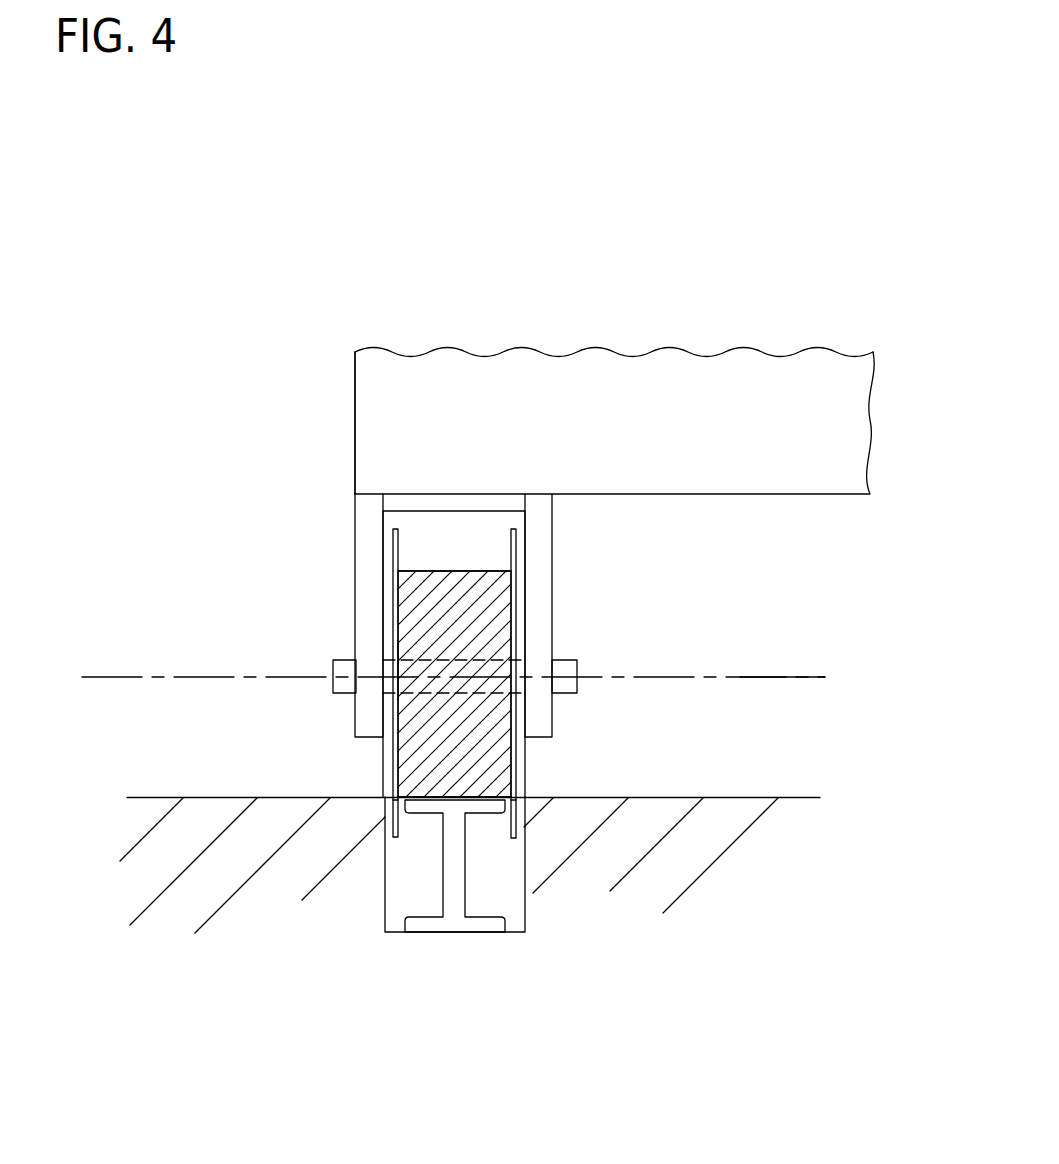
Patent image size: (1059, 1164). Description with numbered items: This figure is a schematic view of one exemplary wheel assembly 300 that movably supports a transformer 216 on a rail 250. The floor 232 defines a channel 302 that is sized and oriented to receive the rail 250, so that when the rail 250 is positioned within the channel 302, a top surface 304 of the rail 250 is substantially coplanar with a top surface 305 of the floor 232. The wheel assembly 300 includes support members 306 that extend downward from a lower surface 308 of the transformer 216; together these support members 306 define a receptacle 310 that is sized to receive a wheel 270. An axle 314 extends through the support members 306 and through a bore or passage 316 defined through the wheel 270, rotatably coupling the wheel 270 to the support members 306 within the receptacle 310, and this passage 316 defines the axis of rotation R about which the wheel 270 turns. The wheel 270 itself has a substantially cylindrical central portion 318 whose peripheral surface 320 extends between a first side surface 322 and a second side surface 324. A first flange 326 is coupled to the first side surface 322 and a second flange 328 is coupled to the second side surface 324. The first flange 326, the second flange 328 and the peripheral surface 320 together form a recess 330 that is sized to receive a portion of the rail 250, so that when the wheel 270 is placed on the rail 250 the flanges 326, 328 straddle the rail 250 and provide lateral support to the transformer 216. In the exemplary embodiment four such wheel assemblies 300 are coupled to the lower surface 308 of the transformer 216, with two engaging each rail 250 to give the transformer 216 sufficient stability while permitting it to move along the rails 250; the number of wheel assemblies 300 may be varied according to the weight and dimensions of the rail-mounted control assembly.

The transformer 216 is at (355, 356).
The wheel assembly 300 is at (157, 533).
The receptacle 310 is at (432, 540).
The support member 306 is at (356, 522).
The lower surface 308 is at (762, 494).
The peripheral surface 320 is at (470, 571).
The first side surface 322 is at (393, 627).
The second side surface 324 is at (516, 643).
The bore or passage 316 is at (420, 657).
The axle 314 is at (577, 662).
The top surface of floor 305 is at (207, 798).
The axis of rotation R is at (772, 678).
The wheel 270 is at (425, 750).
The top surface of rail 304 is at (433, 797).
The floor 232 is at (178, 833).
The first flange 326 is at (383, 812).
The second flange 328 is at (516, 817).
The central portion 318 is at (470, 723).
The recess 330 is at (494, 843).
The rail 250 is at (470, 897).
The channel 302 is at (413, 875).